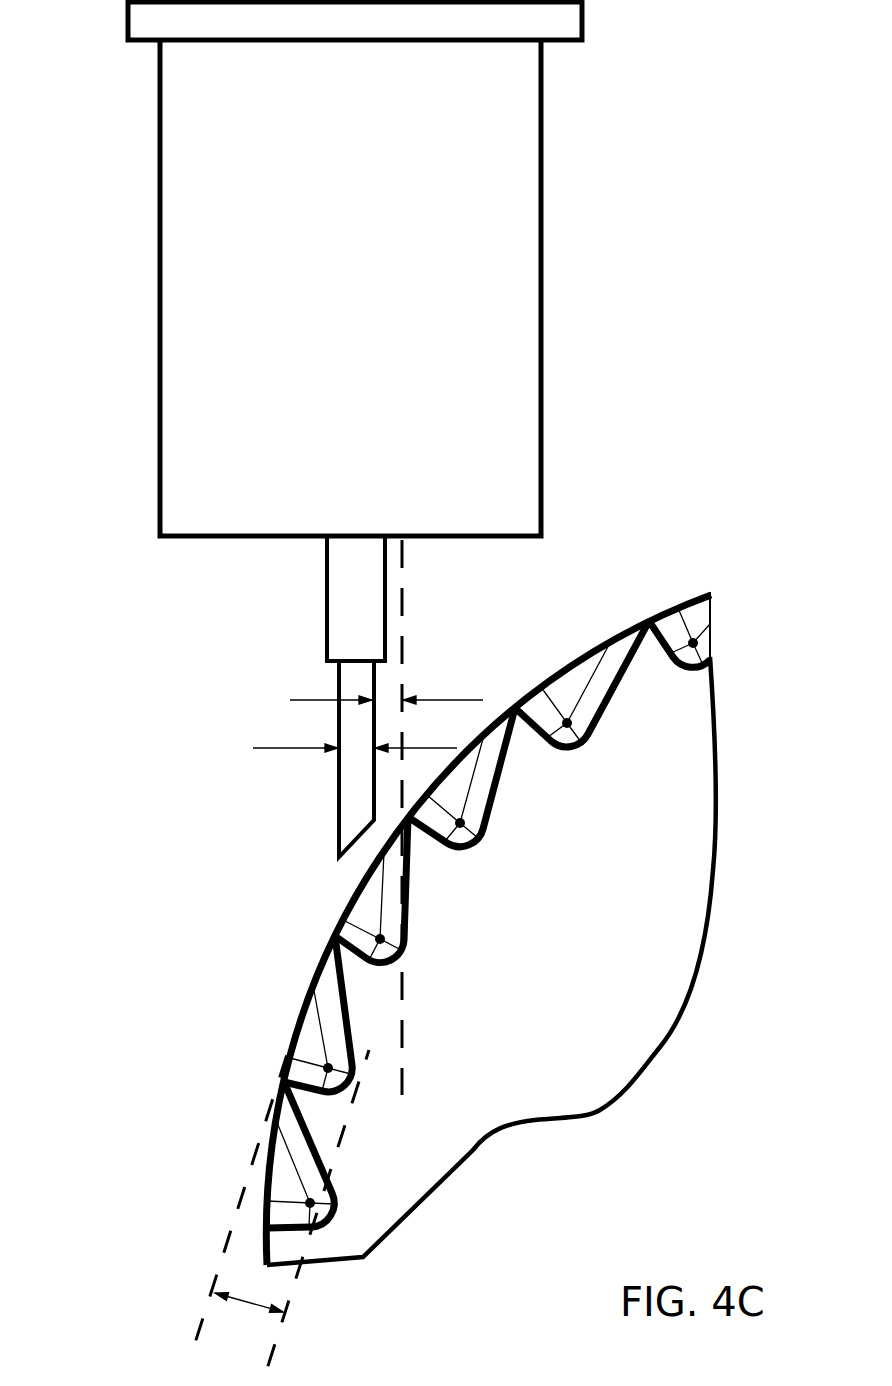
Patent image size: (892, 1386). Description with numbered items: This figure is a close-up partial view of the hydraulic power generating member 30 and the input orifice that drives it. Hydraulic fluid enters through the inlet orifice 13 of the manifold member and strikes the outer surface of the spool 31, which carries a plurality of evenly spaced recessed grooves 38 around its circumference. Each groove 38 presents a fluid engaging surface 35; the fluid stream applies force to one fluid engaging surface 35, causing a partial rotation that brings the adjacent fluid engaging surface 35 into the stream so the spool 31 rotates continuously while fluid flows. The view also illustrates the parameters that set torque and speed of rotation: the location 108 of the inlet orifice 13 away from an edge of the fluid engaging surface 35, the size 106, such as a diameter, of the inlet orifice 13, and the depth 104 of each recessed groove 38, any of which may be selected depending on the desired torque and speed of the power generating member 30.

The inlet orifice 13 is at (355, 607).
The location 108 is at (305, 700).
The size of the inlet orifice 106 is at (267, 750).
The power generating member 30 is at (503, 891).
The spool 31 is at (622, 920).
The recessed groove 38 is at (317, 1050).
The fluid engaging surface 35 is at (328, 1054).
The depth of recessed groove 104 is at (245, 1297).